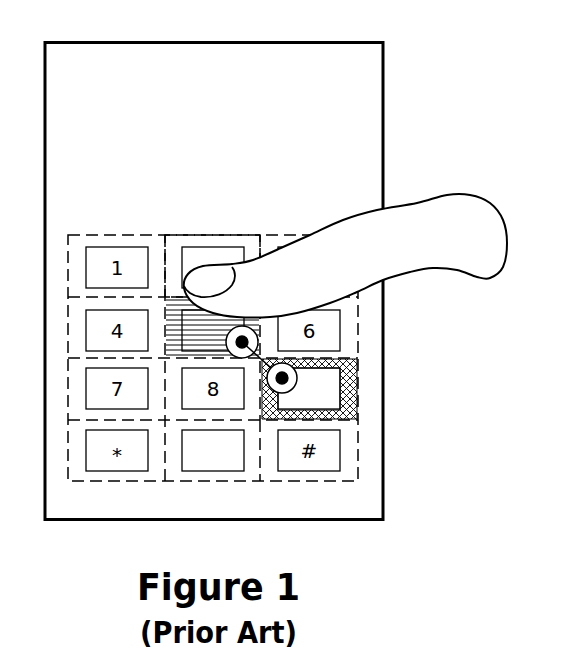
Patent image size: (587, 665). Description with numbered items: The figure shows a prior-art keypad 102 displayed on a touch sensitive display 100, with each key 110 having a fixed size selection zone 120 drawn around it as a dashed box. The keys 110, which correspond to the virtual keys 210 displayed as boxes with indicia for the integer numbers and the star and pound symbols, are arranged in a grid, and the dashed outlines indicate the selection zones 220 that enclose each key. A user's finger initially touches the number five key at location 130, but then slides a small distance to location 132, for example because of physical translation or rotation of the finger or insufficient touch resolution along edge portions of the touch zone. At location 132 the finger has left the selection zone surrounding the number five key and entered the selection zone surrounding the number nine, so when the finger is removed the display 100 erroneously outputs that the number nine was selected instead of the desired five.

The touch sensitive display 100 is at (213, 42).
The keypad 102 is at (243, 188).
The key 110 is at (215, 247).
The fixed size selection zone 120 is at (225, 233).
The initial touch location 130 is at (258, 338).
The slid touch location 132 is at (295, 370).
The virtual key 210 is at (195, 470).
The selection zone 220 is at (258, 457).